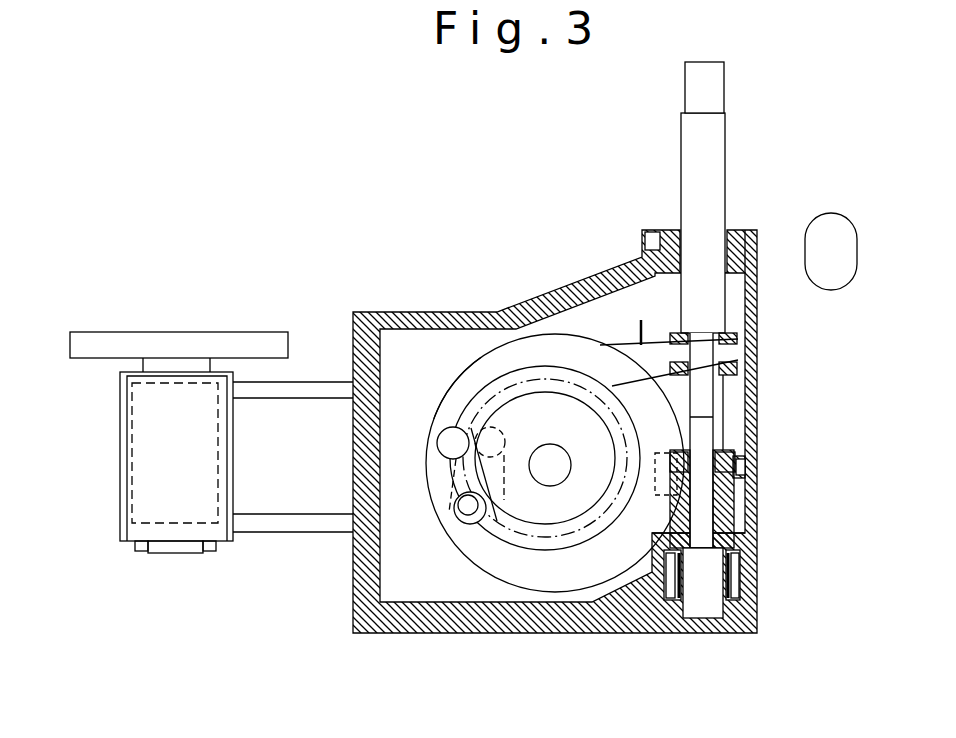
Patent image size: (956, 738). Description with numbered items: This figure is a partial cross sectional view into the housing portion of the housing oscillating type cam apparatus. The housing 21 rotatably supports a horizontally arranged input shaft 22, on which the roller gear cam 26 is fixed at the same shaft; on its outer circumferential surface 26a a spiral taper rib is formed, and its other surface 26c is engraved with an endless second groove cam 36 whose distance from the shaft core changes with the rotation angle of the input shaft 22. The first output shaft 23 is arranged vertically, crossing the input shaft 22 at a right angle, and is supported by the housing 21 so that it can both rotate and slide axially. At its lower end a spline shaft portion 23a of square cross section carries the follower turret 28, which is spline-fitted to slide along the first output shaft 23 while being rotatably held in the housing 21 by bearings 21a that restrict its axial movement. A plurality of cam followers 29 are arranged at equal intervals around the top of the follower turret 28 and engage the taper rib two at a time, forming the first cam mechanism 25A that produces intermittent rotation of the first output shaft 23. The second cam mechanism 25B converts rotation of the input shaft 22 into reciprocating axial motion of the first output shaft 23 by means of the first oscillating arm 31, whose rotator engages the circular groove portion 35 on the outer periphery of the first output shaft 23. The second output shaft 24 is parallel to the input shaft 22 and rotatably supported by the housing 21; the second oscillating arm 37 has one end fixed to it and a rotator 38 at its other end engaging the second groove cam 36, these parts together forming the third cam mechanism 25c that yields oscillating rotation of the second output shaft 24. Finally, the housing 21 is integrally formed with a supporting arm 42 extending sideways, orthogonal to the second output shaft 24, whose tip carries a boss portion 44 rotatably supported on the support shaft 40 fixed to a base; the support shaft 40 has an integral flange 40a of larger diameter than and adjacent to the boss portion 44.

The housing 21 is at (492, 312).
The bearings 21a is at (747, 597).
The input shaft 22 is at (550, 470).
The first output shaft 23 is at (690, 137).
The spline shaft portion 23a is at (703, 527).
The second output shaft 24 is at (447, 518).
The first cam mechanism 25A is at (735, 443).
The second cam mechanism 25B is at (618, 338).
The third cam mechanism 25c is at (440, 548).
The roller gear cam 26 is at (440, 410).
The outer circumferential surface 26a is at (458, 376).
The other surface 26c is at (493, 560).
The follower turret 28 is at (727, 505).
The cam followers 29 is at (757, 473).
The first oscillating arm 31 is at (641, 345).
The circular groove portion 35 is at (740, 352).
The second groove cam 36 is at (580, 533).
The second oscillating arm 37 is at (445, 478).
The rotator 38 is at (455, 444).
The support shaft 40 is at (172, 413).
The flange 40a is at (191, 345).
The supporting arm 42 is at (318, 410).
The boss portion 44 is at (122, 412).